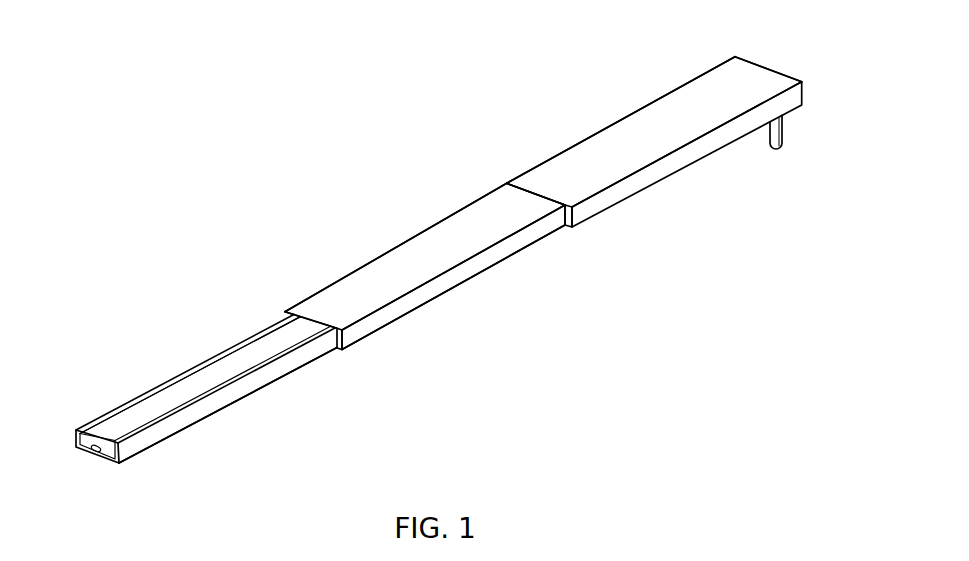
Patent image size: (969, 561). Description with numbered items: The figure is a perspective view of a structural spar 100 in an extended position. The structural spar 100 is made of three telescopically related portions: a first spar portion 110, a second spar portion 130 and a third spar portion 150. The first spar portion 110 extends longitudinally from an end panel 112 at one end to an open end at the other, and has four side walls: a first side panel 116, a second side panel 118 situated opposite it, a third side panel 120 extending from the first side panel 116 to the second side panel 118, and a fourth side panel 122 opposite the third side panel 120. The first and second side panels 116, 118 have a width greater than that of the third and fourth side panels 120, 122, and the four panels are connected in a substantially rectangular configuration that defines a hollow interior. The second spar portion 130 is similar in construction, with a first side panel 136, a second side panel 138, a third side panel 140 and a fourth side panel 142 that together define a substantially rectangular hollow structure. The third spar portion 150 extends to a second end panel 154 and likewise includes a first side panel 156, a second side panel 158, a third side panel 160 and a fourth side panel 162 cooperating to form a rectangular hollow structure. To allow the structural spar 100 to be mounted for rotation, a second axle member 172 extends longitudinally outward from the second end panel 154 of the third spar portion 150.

The structural spar 100 is at (289, 170).
The first spar portion 110 is at (551, 149).
The end panel 112 is at (768, 69).
The first side panel 116 is at (692, 86).
The second side panel 118 is at (694, 163).
The third side panel 120 is at (742, 137).
The fourth side panel 122 is at (600, 131).
The second spar portion 130 is at (304, 291).
The first side panel 136 is at (466, 212).
The second side panel 138 is at (467, 270).
The third side panel 140 is at (528, 246).
The fourth side panel 142 is at (376, 266).
The third spar portion 150 is at (134, 389).
The second end panel 154 is at (113, 464).
The first side panel 156 is at (238, 345).
The second side panel 158 is at (211, 405).
The third side panel 160 is at (285, 374).
The fourth side panel 162 is at (165, 396).
The second axle member 172 is at (94, 452).